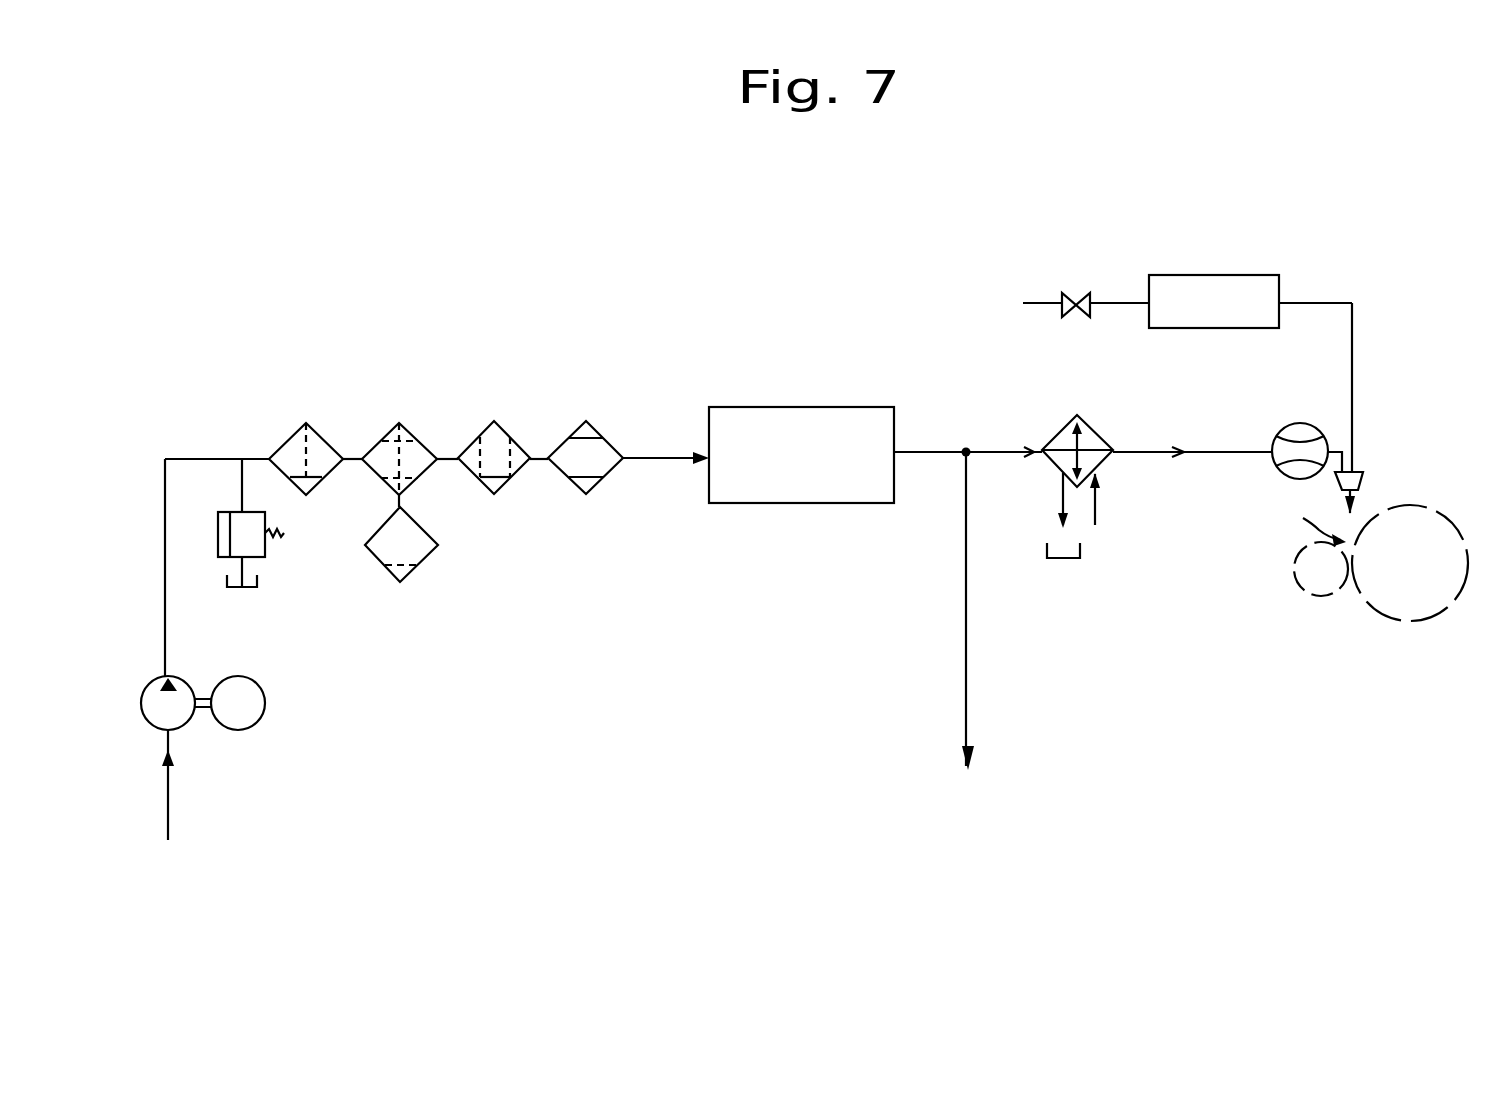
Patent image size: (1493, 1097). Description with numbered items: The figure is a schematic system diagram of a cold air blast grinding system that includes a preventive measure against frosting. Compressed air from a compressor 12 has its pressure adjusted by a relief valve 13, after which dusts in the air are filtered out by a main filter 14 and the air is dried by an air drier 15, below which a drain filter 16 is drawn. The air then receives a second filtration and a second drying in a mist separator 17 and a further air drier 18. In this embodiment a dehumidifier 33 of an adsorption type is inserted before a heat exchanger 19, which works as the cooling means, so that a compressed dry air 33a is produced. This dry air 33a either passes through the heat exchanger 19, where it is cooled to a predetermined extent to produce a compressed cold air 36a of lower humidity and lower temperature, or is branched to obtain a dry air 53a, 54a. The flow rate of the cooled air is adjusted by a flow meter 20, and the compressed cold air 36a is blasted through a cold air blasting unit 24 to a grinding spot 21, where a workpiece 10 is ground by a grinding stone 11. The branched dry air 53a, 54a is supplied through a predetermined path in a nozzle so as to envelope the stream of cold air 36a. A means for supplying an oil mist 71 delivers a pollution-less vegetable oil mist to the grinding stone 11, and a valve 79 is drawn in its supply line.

The workpiece 10 is at (1325, 577).
The grinding stone 11 is at (1413, 610).
The compressor 12 is at (201, 683).
The relief valve 13 is at (273, 550).
The main filter 14 is at (288, 439).
The air drier 15 is at (414, 433).
The drain filter 16 is at (433, 556).
The mist separator 17 is at (522, 473).
The air drier 18 is at (564, 440).
The heat exchanger 19 is at (1061, 429).
The flow meter 20 is at (1291, 423).
The grinding spot 21 is at (1308, 517).
The cold air blasting unit 24 is at (1365, 481).
The dehumidifier 33 is at (757, 406).
The compressed dry air 33a is at (922, 450).
The compressed cold air 36a is at (1153, 449).
The dry air 53a is at (995, 778).
The dry air 54a is at (1030, 762).
The means for supplying an oil mist 71 is at (1215, 275).
The valve 79 is at (1071, 294).